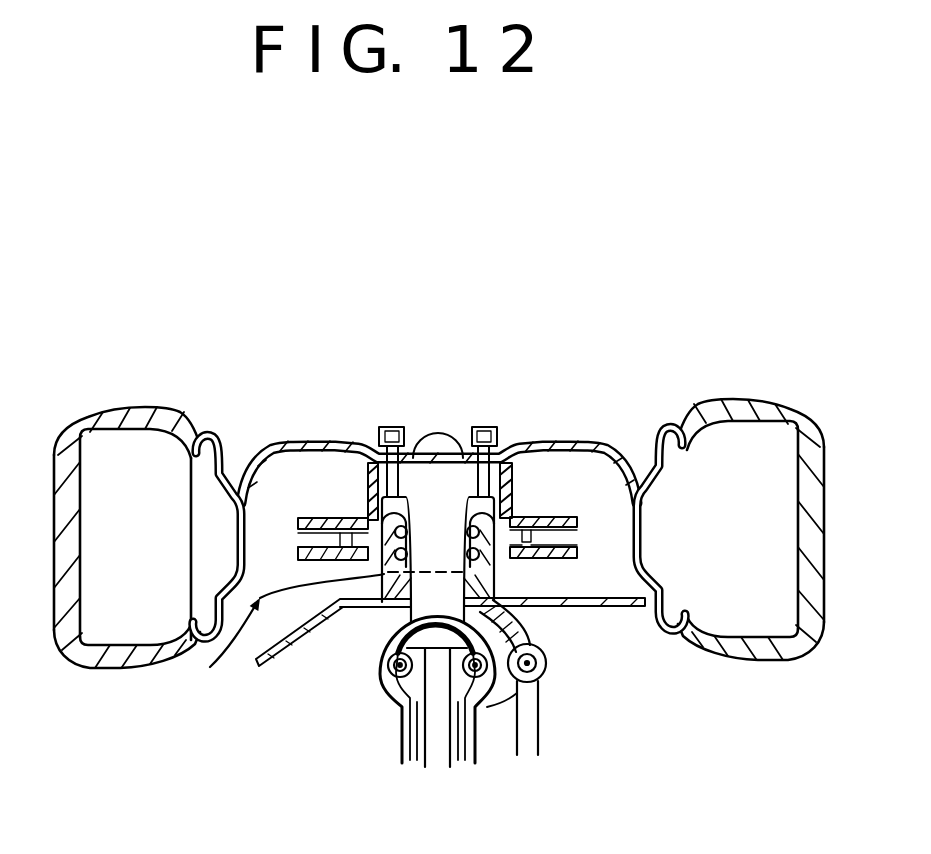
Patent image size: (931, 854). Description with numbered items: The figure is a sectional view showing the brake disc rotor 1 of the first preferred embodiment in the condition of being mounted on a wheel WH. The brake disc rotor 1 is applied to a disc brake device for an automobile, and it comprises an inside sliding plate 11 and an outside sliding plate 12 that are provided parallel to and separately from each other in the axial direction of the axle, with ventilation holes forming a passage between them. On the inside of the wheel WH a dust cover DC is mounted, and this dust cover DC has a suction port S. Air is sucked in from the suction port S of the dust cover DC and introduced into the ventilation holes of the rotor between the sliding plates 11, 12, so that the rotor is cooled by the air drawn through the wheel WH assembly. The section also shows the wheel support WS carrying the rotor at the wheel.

The brake disc rotor 1 is at (348, 487).
The inside sliding plate 11 is at (328, 517).
The outside sliding plate 12 is at (552, 540).
The wheel support hub WS is at (440, 528).
The wheel WH is at (613, 448).
The suction port S is at (258, 637).
The dust cover DC is at (613, 608).